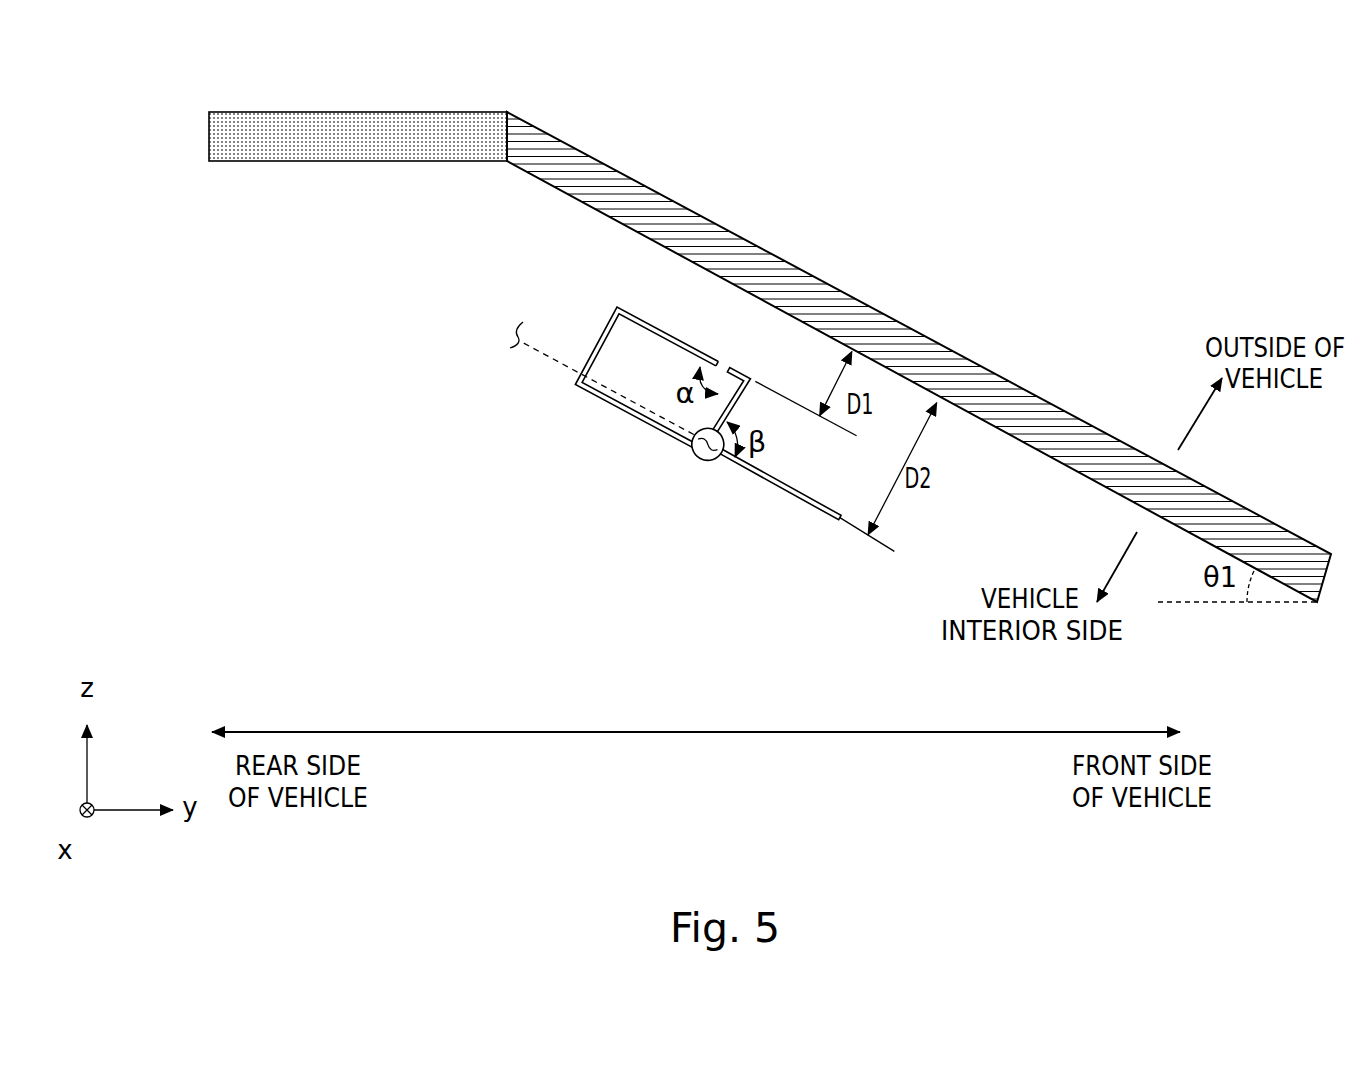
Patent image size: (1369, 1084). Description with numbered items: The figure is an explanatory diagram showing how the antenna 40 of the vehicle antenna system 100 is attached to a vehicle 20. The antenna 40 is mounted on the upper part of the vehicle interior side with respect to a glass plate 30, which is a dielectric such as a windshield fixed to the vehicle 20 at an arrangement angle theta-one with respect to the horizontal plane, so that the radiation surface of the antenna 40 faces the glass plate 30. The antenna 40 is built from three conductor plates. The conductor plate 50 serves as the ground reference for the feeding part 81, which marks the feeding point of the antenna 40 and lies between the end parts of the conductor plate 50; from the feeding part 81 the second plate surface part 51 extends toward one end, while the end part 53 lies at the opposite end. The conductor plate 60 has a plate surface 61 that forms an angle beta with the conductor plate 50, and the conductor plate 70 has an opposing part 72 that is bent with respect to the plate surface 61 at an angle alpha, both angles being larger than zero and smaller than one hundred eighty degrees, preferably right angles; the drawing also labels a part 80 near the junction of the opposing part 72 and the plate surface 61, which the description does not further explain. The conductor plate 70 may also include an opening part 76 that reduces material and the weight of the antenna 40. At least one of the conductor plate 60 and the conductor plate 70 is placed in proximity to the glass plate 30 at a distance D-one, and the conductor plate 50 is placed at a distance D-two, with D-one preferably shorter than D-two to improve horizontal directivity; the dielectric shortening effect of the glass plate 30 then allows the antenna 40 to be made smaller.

The vehicle 20 is at (347, 112).
The glass plate 30 is at (1260, 515).
The antenna 40 is at (668, 555).
The conductor plate 50 is at (800, 520).
The second plate surface part 51 is at (752, 478).
The end part 53 is at (611, 408).
The conductor plate 60 is at (782, 430).
The plate surface 61 is at (742, 397).
The conductor plate 70 is at (610, 307).
The opposing part 72 is at (650, 336).
The opening part 76 is at (600, 346).
The engagement tab 80 is at (727, 363).
The feeding part 81 is at (712, 468).
The vehicle antenna system 100 is at (545, 570).